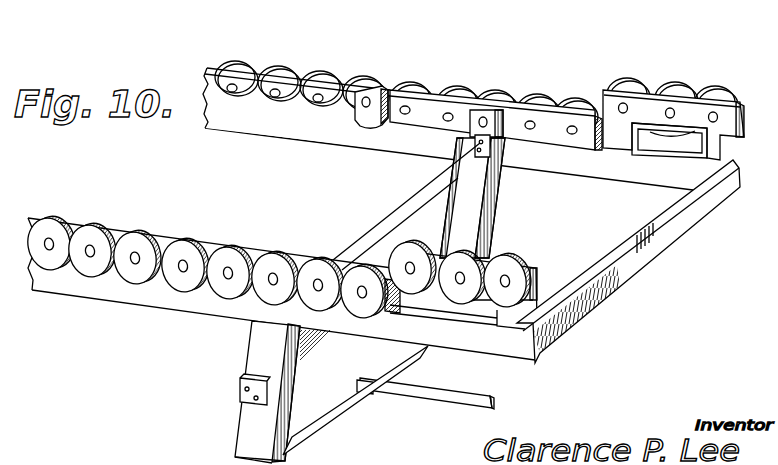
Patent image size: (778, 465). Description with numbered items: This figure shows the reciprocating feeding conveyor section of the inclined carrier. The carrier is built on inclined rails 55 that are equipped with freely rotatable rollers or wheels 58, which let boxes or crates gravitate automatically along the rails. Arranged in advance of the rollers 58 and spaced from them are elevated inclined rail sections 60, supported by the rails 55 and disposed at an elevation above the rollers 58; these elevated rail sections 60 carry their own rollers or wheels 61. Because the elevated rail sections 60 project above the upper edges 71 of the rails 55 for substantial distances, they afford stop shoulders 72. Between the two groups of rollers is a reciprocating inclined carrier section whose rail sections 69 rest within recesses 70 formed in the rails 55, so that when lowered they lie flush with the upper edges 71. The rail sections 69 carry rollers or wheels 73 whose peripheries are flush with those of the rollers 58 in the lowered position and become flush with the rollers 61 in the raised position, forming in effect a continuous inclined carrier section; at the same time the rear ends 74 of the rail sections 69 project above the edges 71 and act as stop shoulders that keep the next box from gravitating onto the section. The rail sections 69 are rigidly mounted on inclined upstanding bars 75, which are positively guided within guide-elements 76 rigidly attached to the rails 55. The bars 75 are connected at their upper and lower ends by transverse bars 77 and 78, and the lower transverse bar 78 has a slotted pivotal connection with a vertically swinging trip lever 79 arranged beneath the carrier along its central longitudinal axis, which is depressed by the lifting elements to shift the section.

The inclined rails 55 is at (222, 118).
The rollers or wheels 58 is at (276, 63).
The elevated inclined rail sections 60 is at (687, 108).
The rollers or wheels 61 is at (670, 83).
The rail sections 69 is at (433, 110).
The recesses 70 is at (357, 97).
The upper edges 71 is at (306, 73).
The stop shoulders 72 is at (610, 100).
The rollers or wheels 73 is at (528, 92).
The rear ends 74 is at (392, 100).
The upstanding bars 75 is at (468, 208).
The guide-elements 76 is at (497, 184).
The transverse strip or bar 77 is at (400, 213).
The transverse bar 78 is at (313, 405).
The trip lever 79 is at (422, 395).